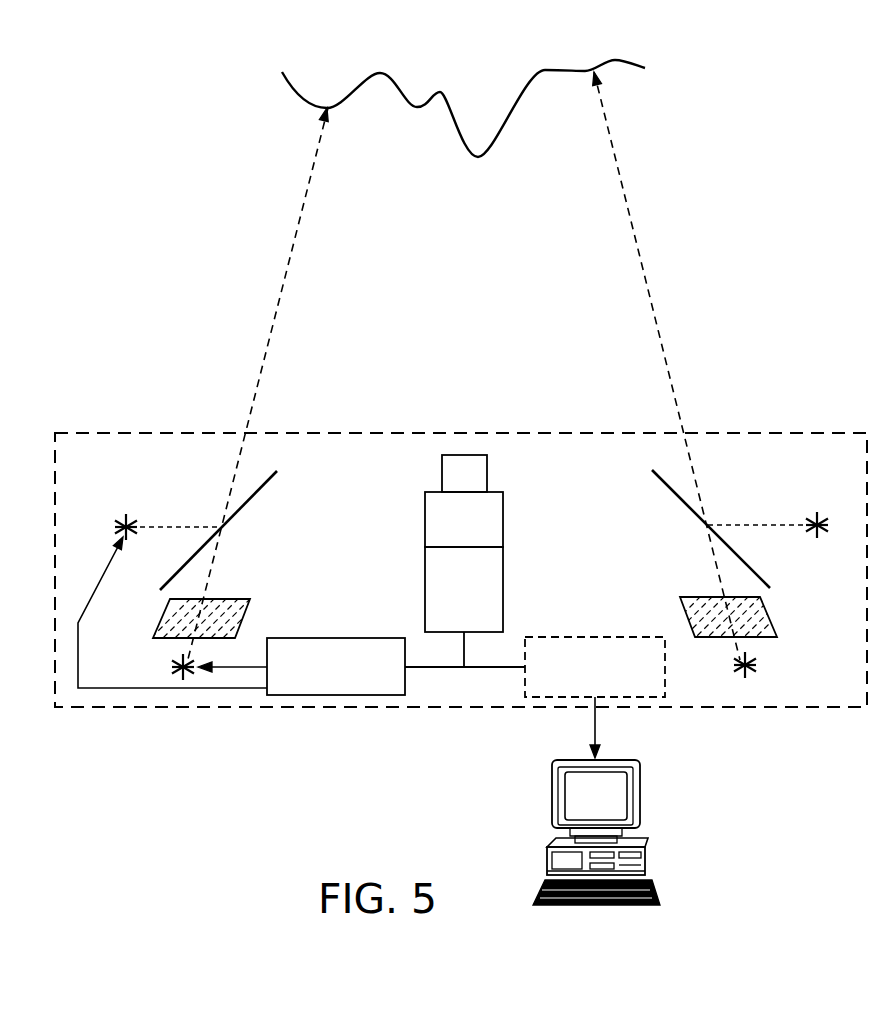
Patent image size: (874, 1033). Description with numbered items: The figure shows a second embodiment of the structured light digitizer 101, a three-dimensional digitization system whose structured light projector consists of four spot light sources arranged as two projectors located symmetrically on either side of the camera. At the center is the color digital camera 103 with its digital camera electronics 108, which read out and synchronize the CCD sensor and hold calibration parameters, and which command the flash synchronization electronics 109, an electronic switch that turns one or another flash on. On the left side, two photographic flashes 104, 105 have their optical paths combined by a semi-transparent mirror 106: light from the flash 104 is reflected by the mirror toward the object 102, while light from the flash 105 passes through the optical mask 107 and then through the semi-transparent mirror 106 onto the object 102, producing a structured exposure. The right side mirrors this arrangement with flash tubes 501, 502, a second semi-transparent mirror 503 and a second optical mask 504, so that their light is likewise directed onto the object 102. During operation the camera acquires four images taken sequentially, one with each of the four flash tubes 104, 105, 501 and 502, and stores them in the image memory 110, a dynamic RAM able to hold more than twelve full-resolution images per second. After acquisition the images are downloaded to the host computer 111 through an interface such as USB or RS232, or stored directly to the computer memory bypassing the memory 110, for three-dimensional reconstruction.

The structured light digitizer 101 is at (814, 698).
The object 102 is at (478, 80).
The color digital camera 103 is at (440, 535).
The photographic flash 104 is at (131, 522).
The photographic flash 105 is at (176, 665).
The semi-transparent mirror 106 is at (240, 512).
The optical mask 107 is at (240, 615).
The digital camera electronics 108 is at (440, 610).
The flash synchronization electronics 109 is at (311, 682).
The image memory 110 is at (571, 671).
The host computer 111 is at (640, 816).
The flash tube 501 is at (812, 521).
The flash tube 502 is at (756, 661).
The semi-transparent mirror 503 is at (690, 510).
The optical mask 504 is at (687, 617).